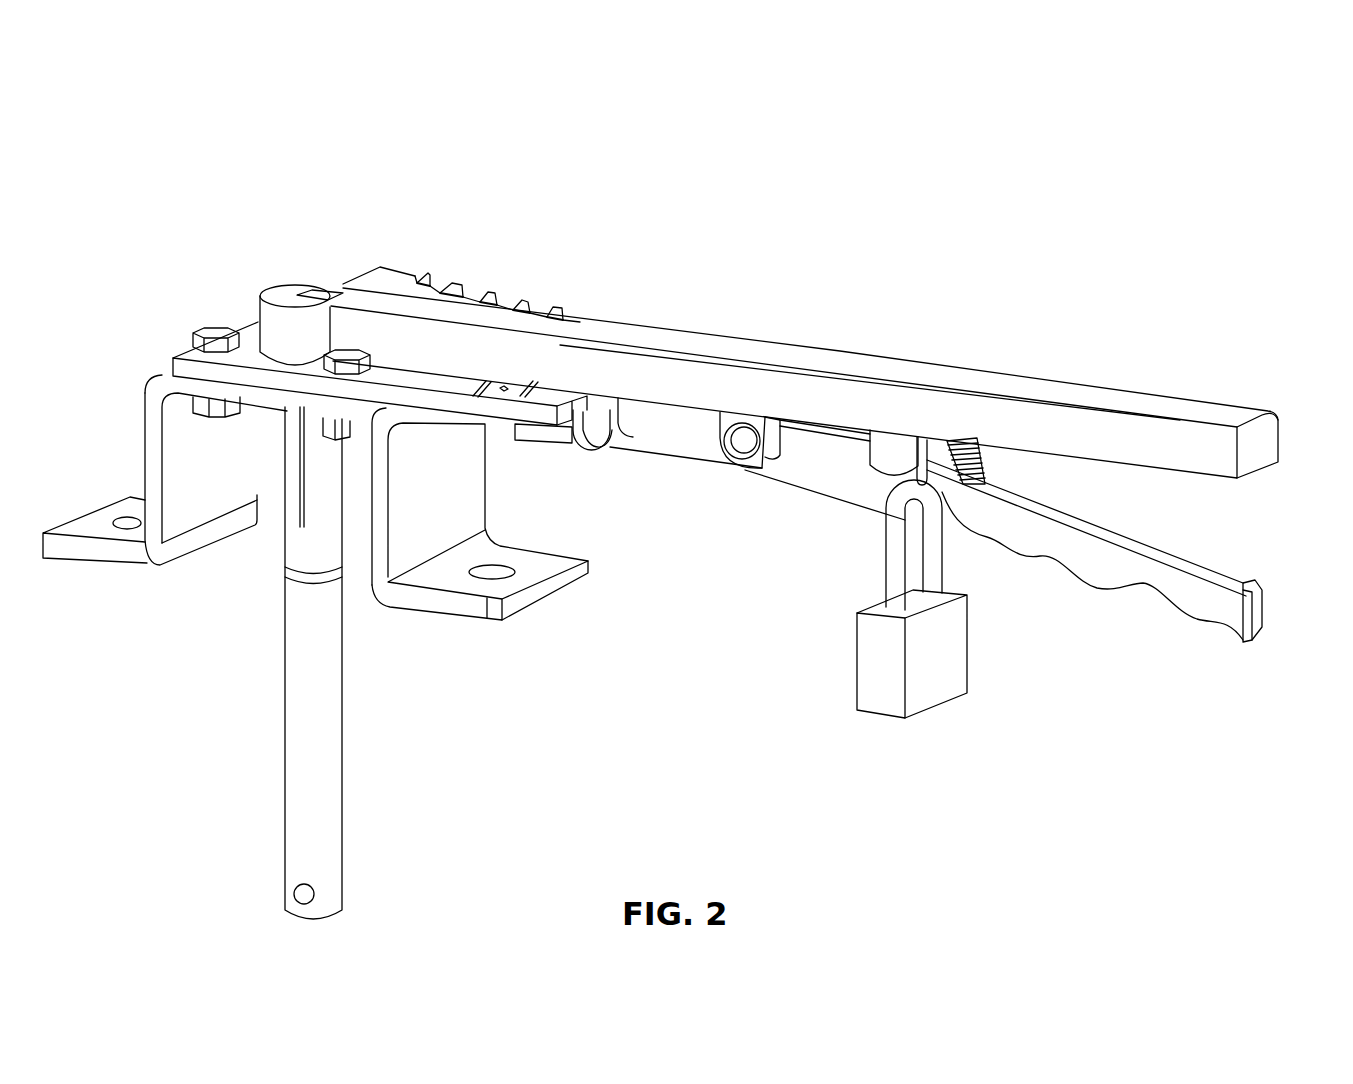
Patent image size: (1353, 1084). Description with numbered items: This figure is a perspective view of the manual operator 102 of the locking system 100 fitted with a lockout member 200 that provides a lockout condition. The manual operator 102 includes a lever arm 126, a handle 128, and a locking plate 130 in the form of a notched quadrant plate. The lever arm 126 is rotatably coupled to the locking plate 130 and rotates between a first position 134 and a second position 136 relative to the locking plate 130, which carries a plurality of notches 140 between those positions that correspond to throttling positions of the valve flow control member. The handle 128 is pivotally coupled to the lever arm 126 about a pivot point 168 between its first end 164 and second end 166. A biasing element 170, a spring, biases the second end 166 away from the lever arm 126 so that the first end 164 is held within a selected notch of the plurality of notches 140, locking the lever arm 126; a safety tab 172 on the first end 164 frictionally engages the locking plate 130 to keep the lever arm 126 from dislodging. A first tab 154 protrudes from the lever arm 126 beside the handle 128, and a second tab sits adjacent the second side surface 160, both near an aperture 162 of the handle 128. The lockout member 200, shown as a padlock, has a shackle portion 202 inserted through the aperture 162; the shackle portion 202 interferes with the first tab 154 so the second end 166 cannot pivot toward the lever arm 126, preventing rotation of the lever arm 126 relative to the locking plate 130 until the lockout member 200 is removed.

The locking system 100 is at (997, 145).
The manual operator 102 is at (782, 268).
The lever arm 126 is at (857, 367).
The handle 128 is at (1141, 584).
The locking plate 130 is at (195, 368).
The first position 134 is at (594, 410).
The second position 136 is at (381, 268).
The plurality of notches 140 is at (536, 264).
The first tab 154 is at (883, 463).
The second side surface 160 is at (1248, 583).
The aperture 162 is at (944, 515).
The first end 164 is at (570, 445).
The second end 166 is at (1226, 621).
The pivot point 168 is at (747, 413).
The biasing element 170 is at (983, 462).
The safety tab 172 is at (522, 441).
The lockout member 200 is at (877, 670).
The shackle portion 202 is at (877, 550).